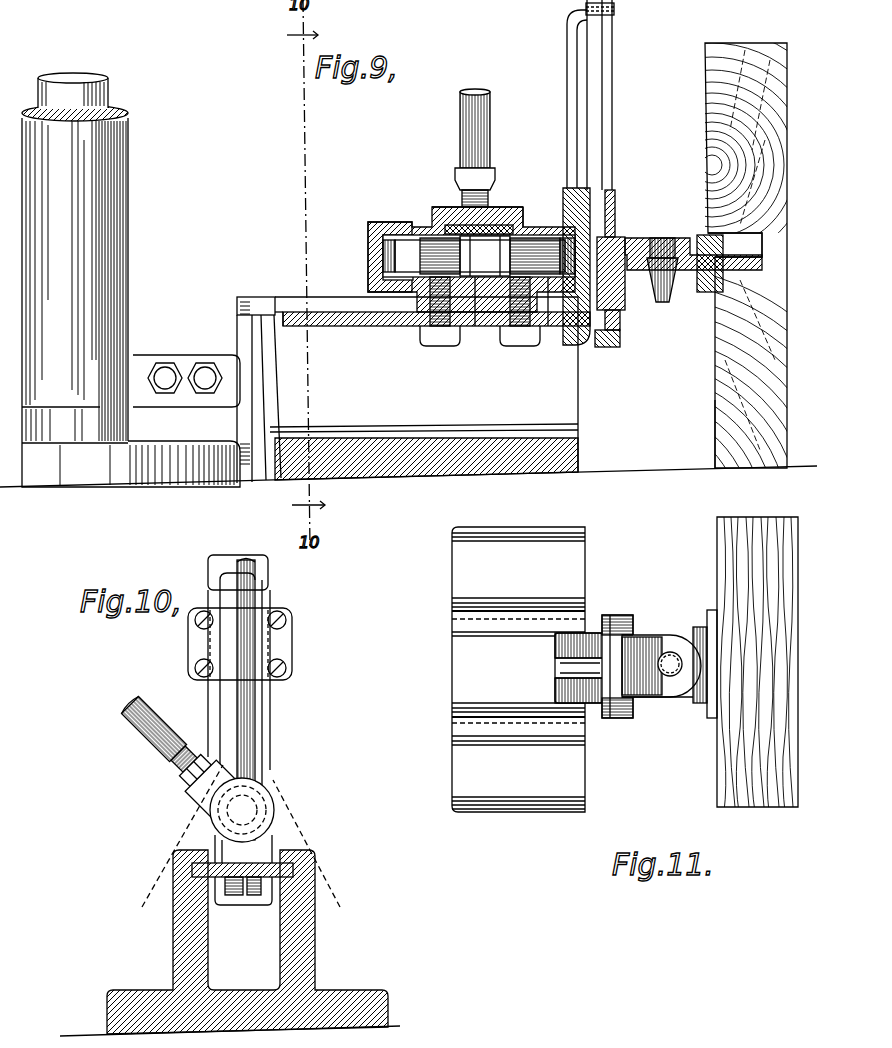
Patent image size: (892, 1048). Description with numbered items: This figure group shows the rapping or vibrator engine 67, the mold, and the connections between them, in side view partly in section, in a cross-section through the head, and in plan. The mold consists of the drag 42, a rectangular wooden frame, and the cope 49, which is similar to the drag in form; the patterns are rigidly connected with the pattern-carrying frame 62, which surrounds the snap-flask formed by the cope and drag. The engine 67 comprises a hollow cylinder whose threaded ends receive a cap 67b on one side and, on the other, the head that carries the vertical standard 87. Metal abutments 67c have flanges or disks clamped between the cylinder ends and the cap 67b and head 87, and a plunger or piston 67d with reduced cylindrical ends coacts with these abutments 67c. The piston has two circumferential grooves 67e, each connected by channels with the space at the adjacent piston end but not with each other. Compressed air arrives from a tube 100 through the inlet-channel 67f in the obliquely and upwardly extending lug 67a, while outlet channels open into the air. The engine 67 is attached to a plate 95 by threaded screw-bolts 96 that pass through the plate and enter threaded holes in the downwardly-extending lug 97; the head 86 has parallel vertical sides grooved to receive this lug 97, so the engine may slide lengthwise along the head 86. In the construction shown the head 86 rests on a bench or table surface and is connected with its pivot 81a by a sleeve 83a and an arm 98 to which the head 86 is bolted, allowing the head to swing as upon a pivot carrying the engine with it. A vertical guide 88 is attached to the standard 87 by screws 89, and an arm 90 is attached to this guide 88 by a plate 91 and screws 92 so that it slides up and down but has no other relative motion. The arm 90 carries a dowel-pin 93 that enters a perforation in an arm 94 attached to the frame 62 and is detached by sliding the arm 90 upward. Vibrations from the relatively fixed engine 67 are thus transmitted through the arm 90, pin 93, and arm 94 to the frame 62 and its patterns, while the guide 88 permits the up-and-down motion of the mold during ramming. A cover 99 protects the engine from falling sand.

In FIG. 9, the drag 42 is at (705, 88).
In FIG. 11, the drag 42 is at (788, 661).
In FIG. 9, the cope 49 is at (722, 412).
In FIG. 9, the pattern-carrying frame 62 is at (710, 236).
In FIG. 9, the vibrating engine 67 is at (442, 205).
In FIG. 10, the vibrating engine 67 is at (200, 800).
In FIG. 9, the obliquely and upwardly extending lug 67a is at (505, 212).
In FIG. 9, the cap 67b is at (370, 230).
In FIG. 10, the cap 67b is at (275, 802).
In FIG. 9, the metal abutments 67c is at (381, 258).
In FIG. 9, the plunger or piston 67d is at (429, 232).
In FIG. 9, the circumferential grooves 67e is at (475, 330).
In FIG. 9, the inlet-channel 67f is at (522, 226).
In FIG. 9, the pivot 81a is at (92, 73).
In FIG. 9, the sleeve 83a is at (118, 205).
In FIG. 9, the head 86 is at (238, 324).
In FIG. 10, the head 86 is at (238, 1002).
In FIG. 11, the head 86 is at (576, 549).
In FIG. 9, the vertical standard 87 is at (566, 75).
In FIG. 10, the vertical standard 87 is at (260, 898).
In FIG. 11, the vertical standard 87 is at (556, 655).
In FIG. 9, the vertical guide 88 is at (606, 118).
In FIG. 10, the vertical guide 88 is at (272, 702).
In FIG. 11, the vertical guide 88 is at (622, 680).
In FIG. 9, the screws 89 is at (615, 9).
In FIG. 9, the arm 90 is at (640, 240).
In FIG. 11, the arm 90 is at (648, 640).
In FIG. 10, the plate 91 is at (192, 648).
In FIG. 11, the plate 91 is at (613, 618).
In FIG. 10, the screws 92 is at (287, 627).
In FIG. 11, the screws 92 is at (610, 720).
In FIG. 9, the dowel-pin 93 is at (663, 303).
In FIG. 11, the dowel-pin 93 is at (670, 700).
In FIG. 9, the arm 94 is at (695, 270).
In FIG. 11, the arm 94 is at (698, 636).
In FIG. 9, the plate 95 is at (378, 328).
In FIG. 10, the plate 95 is at (300, 868).
In FIG. 9, the threaded screw-bolts 96 is at (445, 348).
In FIG. 10, the threaded screw-bolts 96 is at (238, 892).
In FIG. 9, the downwardly-extending lug 97 is at (492, 332).
In FIG. 10, the downwardly-extending lug 97 is at (222, 842).
In FIG. 9, the arm 98 is at (178, 358).
In FIG. 10, the cover 99 is at (168, 868).
In FIG. 9, the tube 100 is at (486, 114).
In FIG. 10, the tube 100 is at (145, 736).